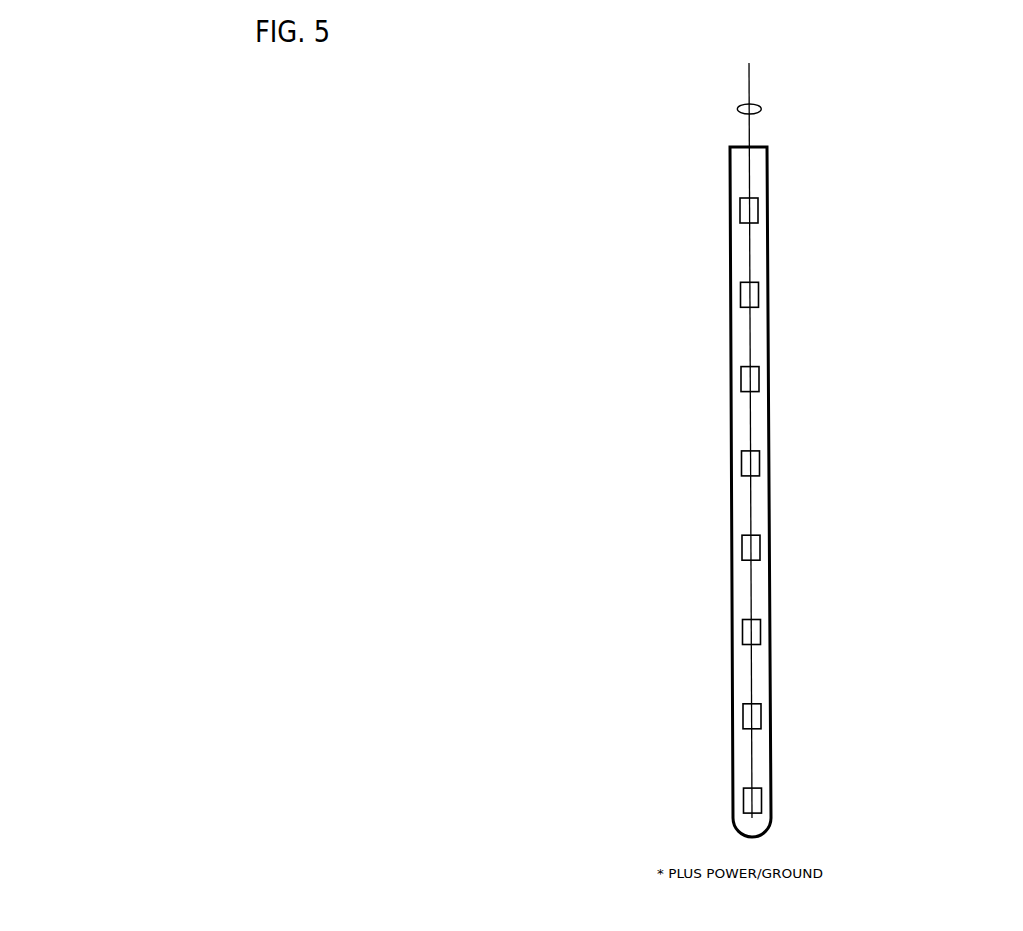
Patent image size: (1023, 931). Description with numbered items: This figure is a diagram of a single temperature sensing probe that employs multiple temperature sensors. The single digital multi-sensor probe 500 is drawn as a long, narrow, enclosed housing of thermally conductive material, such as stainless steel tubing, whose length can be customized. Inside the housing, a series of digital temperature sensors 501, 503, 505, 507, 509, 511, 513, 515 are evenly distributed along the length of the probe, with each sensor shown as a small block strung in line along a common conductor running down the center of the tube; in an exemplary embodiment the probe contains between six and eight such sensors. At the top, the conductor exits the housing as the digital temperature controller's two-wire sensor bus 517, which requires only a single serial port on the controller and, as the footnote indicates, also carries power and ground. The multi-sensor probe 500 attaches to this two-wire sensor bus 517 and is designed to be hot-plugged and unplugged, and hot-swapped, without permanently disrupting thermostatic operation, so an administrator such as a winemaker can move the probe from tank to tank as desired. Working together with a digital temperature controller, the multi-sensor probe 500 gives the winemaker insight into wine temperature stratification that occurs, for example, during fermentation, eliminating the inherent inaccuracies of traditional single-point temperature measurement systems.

The multi-sensor probe 500 is at (690, 205).
The digital temperature sensor 501 is at (763, 201).
The digital temperature sensor 503 is at (764, 285).
The digital temperature sensor 505 is at (764, 369).
The digital temperature sensor 507 is at (765, 454).
The digital temperature sensor 509 is at (765, 538).
The digital temperature sensor 511 is at (766, 622).
The digital temperature sensor 513 is at (766, 706).
The digital temperature sensor 515 is at (767, 791).
The 2-wire sensor bus 517 is at (768, 102).